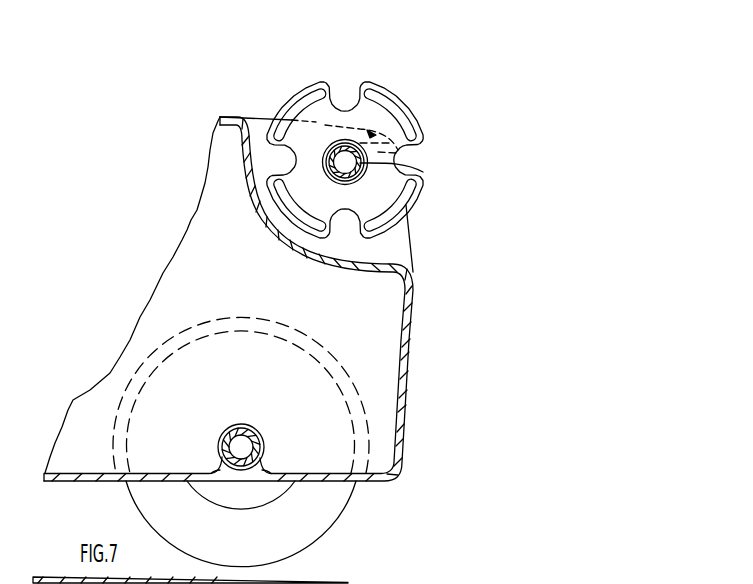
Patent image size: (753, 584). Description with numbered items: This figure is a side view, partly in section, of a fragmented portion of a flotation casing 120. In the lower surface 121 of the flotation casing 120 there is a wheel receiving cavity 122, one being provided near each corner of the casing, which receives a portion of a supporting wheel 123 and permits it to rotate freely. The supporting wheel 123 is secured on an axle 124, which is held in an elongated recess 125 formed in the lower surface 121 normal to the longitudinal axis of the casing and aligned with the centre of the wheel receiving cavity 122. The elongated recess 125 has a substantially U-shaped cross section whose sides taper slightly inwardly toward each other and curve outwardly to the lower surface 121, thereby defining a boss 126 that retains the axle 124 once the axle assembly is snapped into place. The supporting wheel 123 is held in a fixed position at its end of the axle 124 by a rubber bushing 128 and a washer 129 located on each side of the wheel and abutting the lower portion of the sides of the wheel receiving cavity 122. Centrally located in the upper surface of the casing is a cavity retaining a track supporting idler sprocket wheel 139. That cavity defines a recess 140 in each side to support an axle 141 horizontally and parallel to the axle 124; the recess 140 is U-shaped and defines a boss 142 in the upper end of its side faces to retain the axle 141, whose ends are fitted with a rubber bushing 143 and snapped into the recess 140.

The flotation casing 120 is at (312, 482).
The lower surface 121 is at (115, 482).
The wheel receiving cavity 122 is at (348, 373).
The supporting wheel 123 is at (339, 500).
The axle 124 is at (246, 443).
The elongated recess 125 is at (225, 435).
The boss 126 is at (268, 467).
The rubber bushing 128 is at (243, 466).
The washer 129 is at (233, 469).
The track supporting idler sprocket wheel 139 is at (387, 193).
The recess 140 is at (392, 125).
The axle 141 is at (402, 173).
The boss 142 is at (407, 152).
The rubber bushing 143 is at (336, 177).